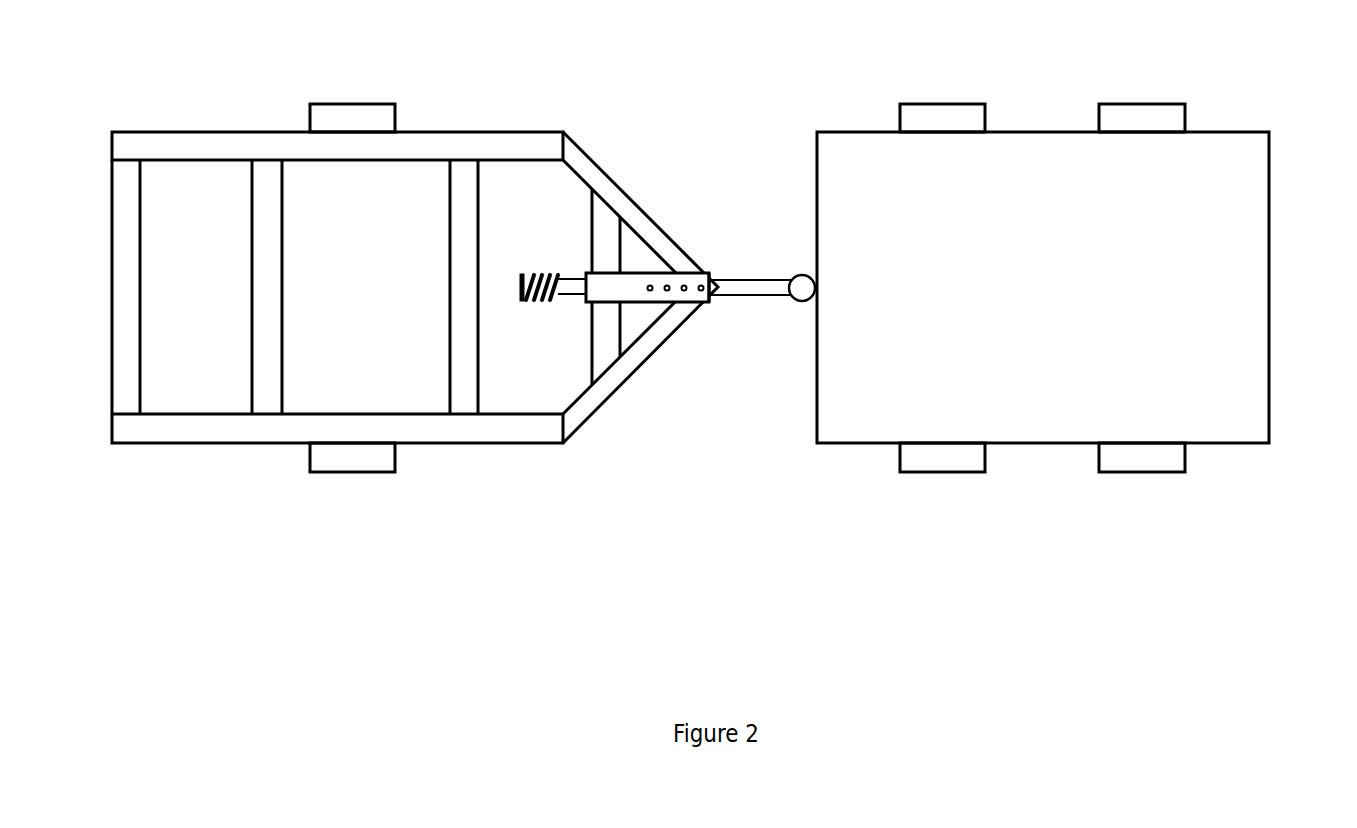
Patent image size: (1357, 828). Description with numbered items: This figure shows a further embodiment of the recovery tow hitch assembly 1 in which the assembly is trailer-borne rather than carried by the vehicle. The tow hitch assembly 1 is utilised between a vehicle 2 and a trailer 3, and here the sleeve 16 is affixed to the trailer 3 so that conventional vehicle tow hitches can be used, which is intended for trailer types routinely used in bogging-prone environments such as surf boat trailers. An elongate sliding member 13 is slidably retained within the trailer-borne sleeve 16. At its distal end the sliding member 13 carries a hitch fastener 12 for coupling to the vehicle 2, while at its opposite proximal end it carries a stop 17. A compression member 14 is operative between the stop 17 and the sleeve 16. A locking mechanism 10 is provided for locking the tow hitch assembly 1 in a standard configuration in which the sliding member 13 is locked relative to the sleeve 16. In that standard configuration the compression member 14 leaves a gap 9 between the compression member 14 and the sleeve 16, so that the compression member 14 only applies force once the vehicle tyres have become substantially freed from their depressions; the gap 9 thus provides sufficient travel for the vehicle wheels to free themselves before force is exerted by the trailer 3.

The tow hitch assembly 1 is at (742, 130).
The vehicle 2 is at (1269, 132).
The trailer 3 is at (112, 132).
The gap 9 is at (585, 305).
The locking mechanism 10 is at (706, 302).
The hitch fastener 12 is at (815, 290).
The elongate sliding member 13 is at (789, 280).
The compression member 14 is at (554, 273).
The sleeve 16 is at (709, 273).
The stop 17 is at (524, 273).